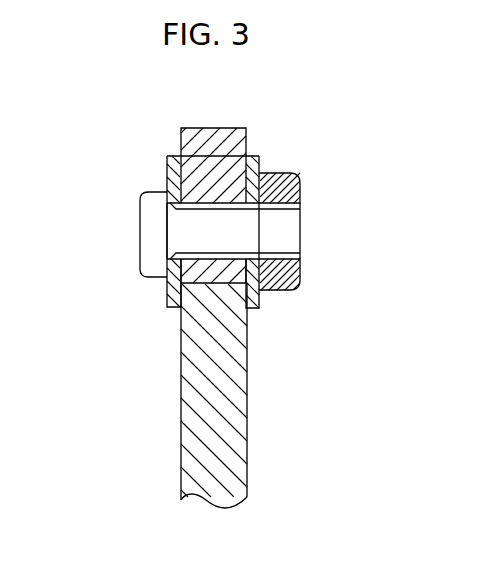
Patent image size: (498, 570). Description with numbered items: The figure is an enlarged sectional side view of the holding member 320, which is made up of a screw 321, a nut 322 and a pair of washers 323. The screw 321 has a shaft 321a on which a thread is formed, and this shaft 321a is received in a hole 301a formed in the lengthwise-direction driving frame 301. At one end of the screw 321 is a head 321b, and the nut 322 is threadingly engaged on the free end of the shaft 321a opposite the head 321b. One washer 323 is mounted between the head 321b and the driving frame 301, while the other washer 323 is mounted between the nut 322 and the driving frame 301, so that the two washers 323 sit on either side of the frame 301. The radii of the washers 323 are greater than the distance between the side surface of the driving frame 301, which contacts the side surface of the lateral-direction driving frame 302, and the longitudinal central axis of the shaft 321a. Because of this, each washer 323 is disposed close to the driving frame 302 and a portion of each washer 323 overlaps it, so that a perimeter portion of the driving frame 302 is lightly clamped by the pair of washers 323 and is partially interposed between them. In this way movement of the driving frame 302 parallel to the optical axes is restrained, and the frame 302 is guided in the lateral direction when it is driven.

The lengthwise-direction driving frame 301 is at (211, 147).
The hole 301a is at (212, 258).
The lateral-direction driving frame 302 is at (237, 418).
The holding member 320 is at (316, 151).
The screw 321 is at (153, 284).
The shaft 321a is at (283, 230).
The head 321b is at (157, 211).
The nut 322 is at (300, 275).
The washers 323 is at (168, 304).